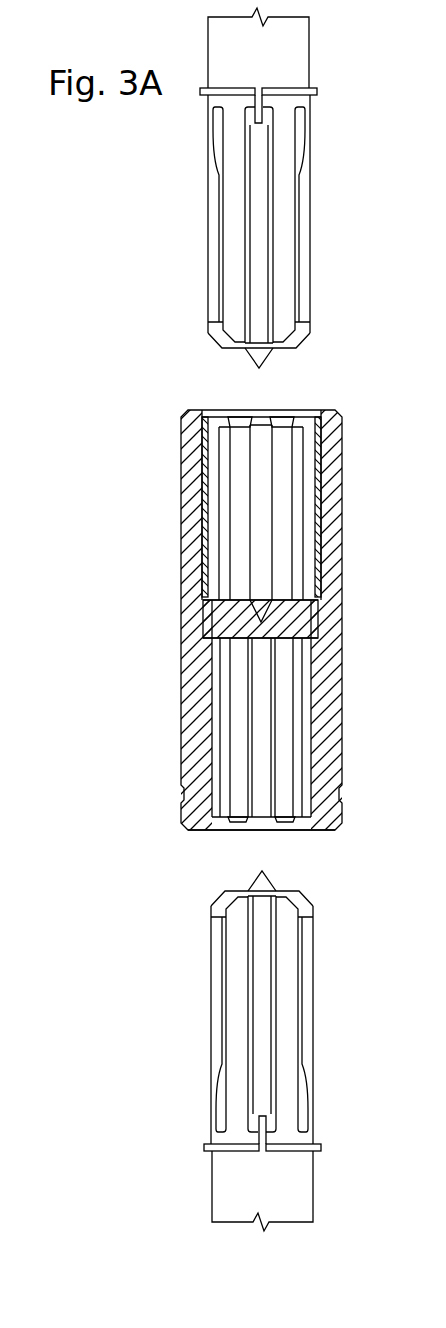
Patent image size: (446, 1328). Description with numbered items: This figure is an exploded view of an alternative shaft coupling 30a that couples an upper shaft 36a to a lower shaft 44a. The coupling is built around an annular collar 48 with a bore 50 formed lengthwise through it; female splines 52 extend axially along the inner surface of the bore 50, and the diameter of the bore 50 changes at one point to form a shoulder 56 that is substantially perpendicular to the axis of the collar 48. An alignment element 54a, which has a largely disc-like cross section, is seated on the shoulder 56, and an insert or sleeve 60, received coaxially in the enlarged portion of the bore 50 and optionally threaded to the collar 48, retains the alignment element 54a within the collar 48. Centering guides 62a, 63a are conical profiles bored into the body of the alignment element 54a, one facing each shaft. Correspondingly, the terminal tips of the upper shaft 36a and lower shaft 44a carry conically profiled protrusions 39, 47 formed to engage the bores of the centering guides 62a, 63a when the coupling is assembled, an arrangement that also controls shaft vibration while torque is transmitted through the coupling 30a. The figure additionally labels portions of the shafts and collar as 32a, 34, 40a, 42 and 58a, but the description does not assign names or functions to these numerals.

The shaft coupling 30a is at (224, 630).
The first tube 32a is at (282, 66).
The resilient fingers of first connector 34 is at (303, 168).
The upper shaft 36a is at (225, 240).
The conically profiled protrusion 39 is at (250, 360).
The second tube 40a is at (286, 1190).
The resilient fingers of second connector 42 is at (305, 983).
The lower shaft 44a is at (240, 1000).
The conically profiled protrusion 47 is at (270, 882).
The annular collar 48 is at (190, 736).
The bore 50 is at (206, 847).
The female splines 52 is at (280, 432).
The alignment element 54a is at (205, 647).
The shoulder 56 is at (244, 643).
The first seat 58a is at (205, 613).
The insert 60 is at (205, 469).
The centering guide 62a is at (312, 485).
The centering guide 63a is at (257, 650).